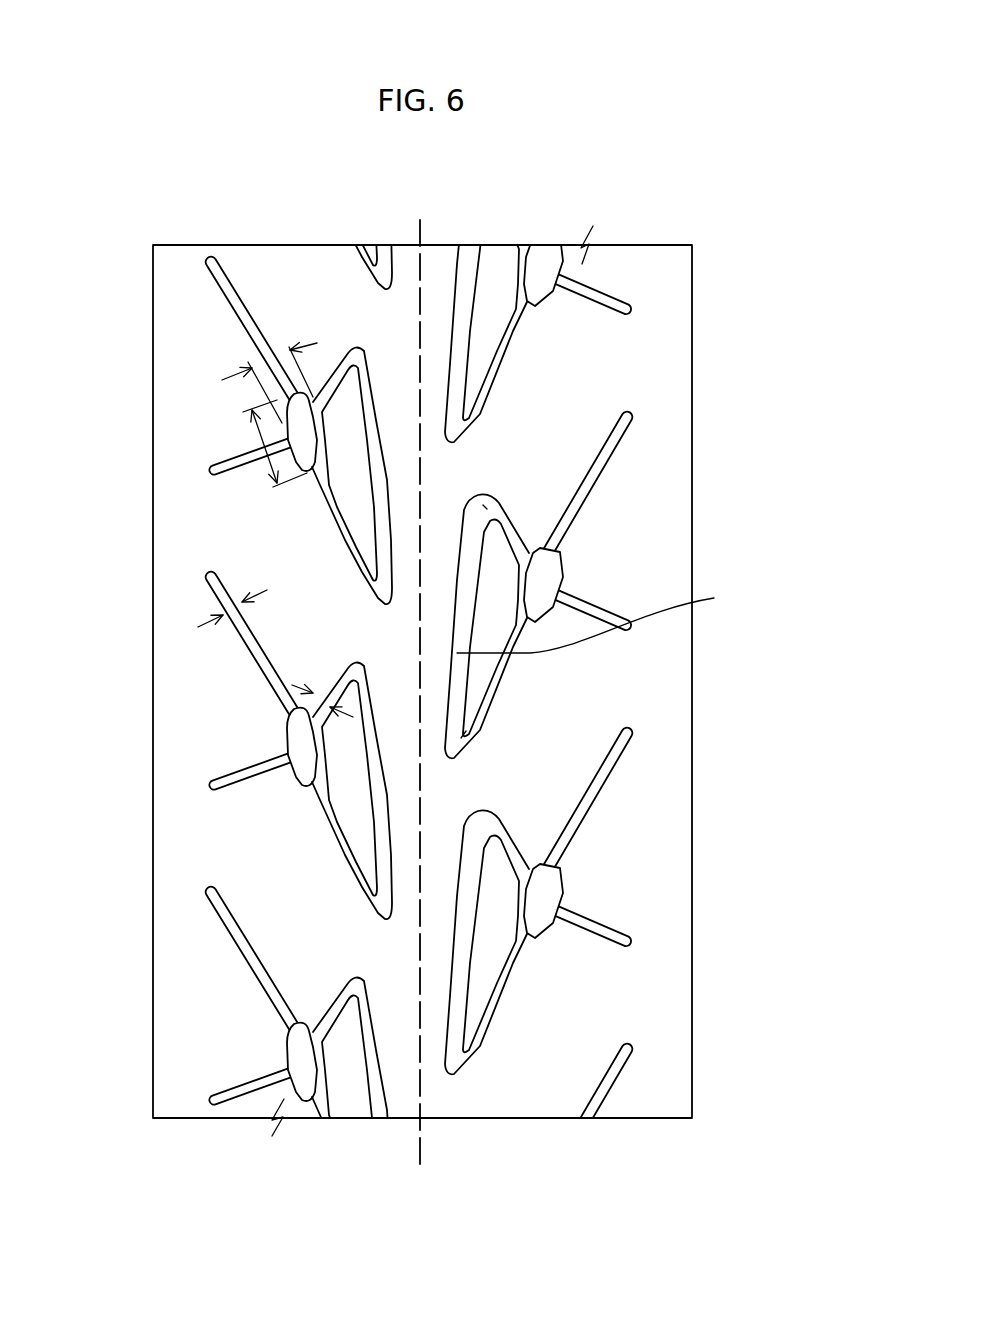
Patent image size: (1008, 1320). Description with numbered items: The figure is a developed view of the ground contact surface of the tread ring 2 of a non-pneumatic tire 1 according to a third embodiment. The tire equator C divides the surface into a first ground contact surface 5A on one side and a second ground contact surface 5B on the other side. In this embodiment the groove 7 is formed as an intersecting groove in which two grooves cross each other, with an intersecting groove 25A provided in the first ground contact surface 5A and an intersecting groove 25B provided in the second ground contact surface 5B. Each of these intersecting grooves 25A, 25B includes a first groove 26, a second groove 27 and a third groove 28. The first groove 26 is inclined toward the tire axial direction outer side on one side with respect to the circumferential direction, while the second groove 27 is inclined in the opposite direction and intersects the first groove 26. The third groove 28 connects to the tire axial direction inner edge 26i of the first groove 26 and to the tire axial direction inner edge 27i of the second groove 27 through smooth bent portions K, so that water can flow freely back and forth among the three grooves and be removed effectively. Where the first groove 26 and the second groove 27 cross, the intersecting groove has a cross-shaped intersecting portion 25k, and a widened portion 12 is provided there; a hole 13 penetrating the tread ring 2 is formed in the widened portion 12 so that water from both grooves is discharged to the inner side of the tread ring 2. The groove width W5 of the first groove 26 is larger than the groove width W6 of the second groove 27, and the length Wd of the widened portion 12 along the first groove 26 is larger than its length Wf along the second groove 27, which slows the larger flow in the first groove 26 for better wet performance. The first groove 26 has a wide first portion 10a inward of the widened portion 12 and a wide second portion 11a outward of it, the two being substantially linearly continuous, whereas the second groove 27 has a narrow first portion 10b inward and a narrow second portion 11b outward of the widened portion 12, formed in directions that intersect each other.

The tire 1 is at (705, 205).
The tread ring 2 is at (667, 275).
The first ground contact surface 5A is at (624, 623).
The second ground contact surface 5B is at (241, 633).
The groove 7 is at (446, 592).
The widened portion 12 is at (302, 777).
The hole 13 is at (302, 743).
The intersecting groove on one side 25A is at (634, 419).
The intersecting groove on the other side 25B is at (227, 290).
The intersecting portion 25k is at (195, 589).
The first groove 26 is at (583, 488).
The tire axial direction inner edge of the first groove 26i is at (463, 737).
The second groove 27 is at (590, 608).
The tire axial direction inner edge of the second groove 27i is at (485, 507).
The third groove 28 is at (602, 619).
The wide first portion 10a is at (624, 942).
The narrow first portion 10b is at (522, 857).
The wide second portion 11a is at (587, 800).
The narrow second portion 11b is at (593, 923).
The smooth bent portion K is at (624, 626).
The tire equator C is at (420, 682).
The length of the widened portion along the second groove Wf is at (262, 356).
The length of the widened portion along the first groove Wd is at (257, 432).
The groove width of the first groove W5 is at (227, 608).
The groove width of the second groove W6 is at (330, 700).